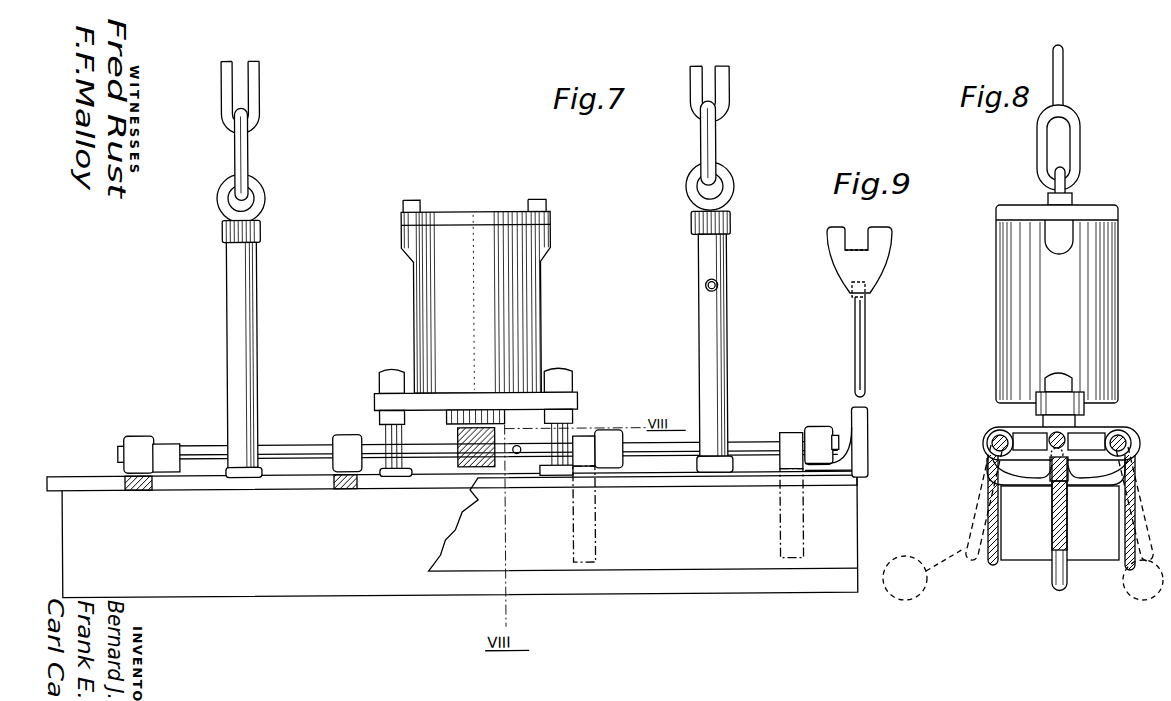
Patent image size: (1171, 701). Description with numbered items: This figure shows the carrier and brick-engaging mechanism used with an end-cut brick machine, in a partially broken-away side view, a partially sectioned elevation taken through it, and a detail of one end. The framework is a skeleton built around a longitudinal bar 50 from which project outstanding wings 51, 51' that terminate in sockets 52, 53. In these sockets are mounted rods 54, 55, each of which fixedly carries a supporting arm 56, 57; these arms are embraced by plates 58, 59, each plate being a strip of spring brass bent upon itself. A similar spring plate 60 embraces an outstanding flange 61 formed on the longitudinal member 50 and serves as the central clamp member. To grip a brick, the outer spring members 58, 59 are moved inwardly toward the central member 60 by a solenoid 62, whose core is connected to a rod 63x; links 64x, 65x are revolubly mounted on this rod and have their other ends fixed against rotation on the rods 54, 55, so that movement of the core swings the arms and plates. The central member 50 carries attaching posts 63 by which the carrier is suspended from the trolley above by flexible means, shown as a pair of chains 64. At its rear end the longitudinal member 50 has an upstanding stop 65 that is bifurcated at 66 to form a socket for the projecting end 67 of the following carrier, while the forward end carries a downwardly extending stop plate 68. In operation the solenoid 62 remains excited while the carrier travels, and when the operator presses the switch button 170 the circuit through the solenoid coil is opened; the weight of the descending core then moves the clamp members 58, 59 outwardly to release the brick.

In FIG. 7, the longitudinal bar 50 is at (310, 488).
In FIG. 9, the longitudinal bar 50 is at (850, 295).
In FIG. 8, the longitudinal bar 50 is at (1050, 523).
In FIG. 7, the outstanding wing 51 is at (256, 515).
In FIG. 8, the outstanding wing 51 is at (1019, 490).
In FIG. 8, the outstanding wing 51' is at (1096, 490).
In FIG. 7, the socket 52 is at (135, 443).
In FIG. 8, the socket 52 is at (987, 445).
In FIG. 8, the socket 53 is at (1130, 448).
In FIG. 7, the rod 54 is at (748, 440).
In FIG. 8, the rod 54 is at (983, 430).
In FIG. 7, the rod 55 is at (282, 448).
In FIG. 8, the rod 55 is at (1123, 428).
In FIG. 7, the supporting arm 56 is at (788, 447).
In FIG. 8, the supporting arm 56 is at (987, 563).
In FIG. 7, the supporting arm 57 is at (173, 450).
In FIG. 8, the supporting arm 57 is at (1127, 567).
In FIG. 7, the plate 58 is at (643, 523).
In FIG. 8, the plate 58 is at (995, 567).
In FIG. 8, the plate 59 is at (1127, 577).
In FIG. 8, the spring plate 60 is at (1060, 593).
In FIG. 8, the outstanding flange 61 is at (1067, 533).
In FIG. 7, the solenoid 62 is at (428, 294).
In FIG. 8, the solenoid 62 is at (1030, 270).
In FIG. 7, the attaching post 63 is at (236, 305).
In FIG. 8, the rod 63x is at (1051, 433).
In FIG. 7, the chain 64 is at (244, 155).
In FIG. 8, the chain 64 is at (1040, 147).
In FIG. 8, the link 64x is at (1035, 433).
In FIG. 7, the upstanding stop 65 is at (860, 472).
In FIG. 9, the upstanding stop 65 is at (845, 260).
In FIG. 8, the link 65x is at (1100, 428).
In FIG. 9, the bifurcation 66 is at (838, 232).
In FIG. 7, the projecting end 67 is at (72, 474).
In FIG. 7, the stop plate 68 is at (62, 516).
In FIG. 8, the stop plate 68 is at (1043, 560).
In FIG. 7, the switch button 170 is at (708, 285).